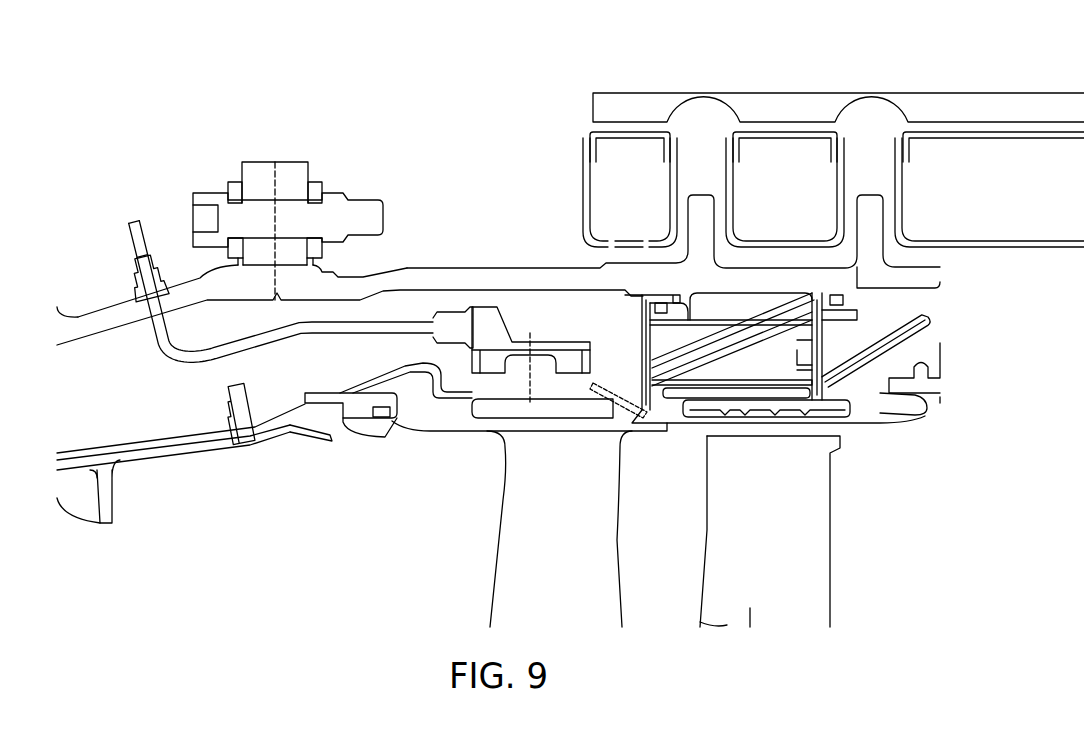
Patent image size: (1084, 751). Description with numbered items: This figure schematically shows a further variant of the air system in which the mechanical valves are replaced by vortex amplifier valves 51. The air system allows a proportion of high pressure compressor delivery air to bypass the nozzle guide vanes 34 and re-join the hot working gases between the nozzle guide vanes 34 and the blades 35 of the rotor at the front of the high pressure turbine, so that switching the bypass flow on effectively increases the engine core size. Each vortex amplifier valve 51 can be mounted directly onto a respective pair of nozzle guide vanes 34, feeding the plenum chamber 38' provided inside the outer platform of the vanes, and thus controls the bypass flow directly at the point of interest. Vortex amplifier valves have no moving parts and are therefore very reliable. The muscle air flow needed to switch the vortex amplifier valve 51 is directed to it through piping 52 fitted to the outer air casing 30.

The outer air casing 30 is at (108, 318).
The piping 52 is at (406, 316).
The vortex amplifier valve 51 is at (552, 345).
The plenum chamber 38' is at (658, 456).
The nozzle guide vane 34 is at (538, 525).
The rotor blade 35 is at (803, 545).